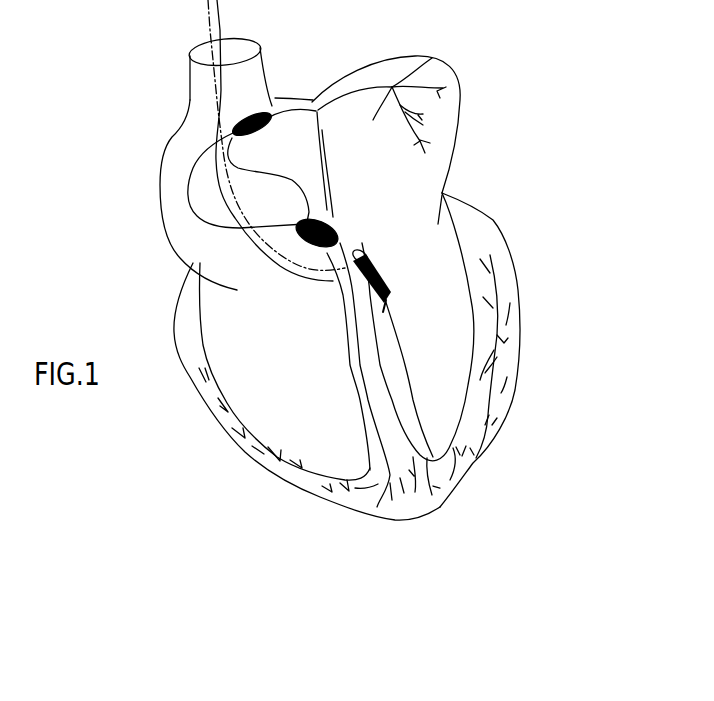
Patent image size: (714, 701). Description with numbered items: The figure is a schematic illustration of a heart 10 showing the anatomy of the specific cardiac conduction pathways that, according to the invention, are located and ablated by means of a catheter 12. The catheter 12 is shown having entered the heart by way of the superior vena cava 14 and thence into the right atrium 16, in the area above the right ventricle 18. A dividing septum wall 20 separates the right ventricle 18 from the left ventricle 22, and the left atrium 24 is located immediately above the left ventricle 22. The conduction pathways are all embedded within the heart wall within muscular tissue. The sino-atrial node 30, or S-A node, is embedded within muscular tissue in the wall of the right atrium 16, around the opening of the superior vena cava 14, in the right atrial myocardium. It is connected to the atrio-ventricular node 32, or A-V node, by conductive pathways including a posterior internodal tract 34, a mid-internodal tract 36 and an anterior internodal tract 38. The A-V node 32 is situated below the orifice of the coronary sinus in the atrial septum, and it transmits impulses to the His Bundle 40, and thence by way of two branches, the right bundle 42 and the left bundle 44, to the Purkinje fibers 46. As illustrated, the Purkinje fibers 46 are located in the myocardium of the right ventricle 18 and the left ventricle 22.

The heart 10 is at (505, 181).
The catheter 12 is at (200, 113).
The superior vena cava 14 is at (250, 47).
The right atrium 16 is at (213, 242).
The right ventricle 18 is at (283, 382).
The septum wall 20 is at (393, 343).
The left ventricle 22 is at (440, 407).
The left atrium 24 is at (443, 60).
The sino-atrial node 30 is at (263, 117).
The atrio-ventricular node 32 is at (343, 210).
The posterior internodal tract 34 is at (330, 167).
The mid-internodal tract 36 is at (271, 168).
The anterior internodal tract 38 is at (186, 191).
The His Bundle 40 is at (358, 244).
The right bundle 42 is at (362, 398).
The left bundle 44 is at (383, 370).
The Purkinje fibers 46 is at (474, 447).